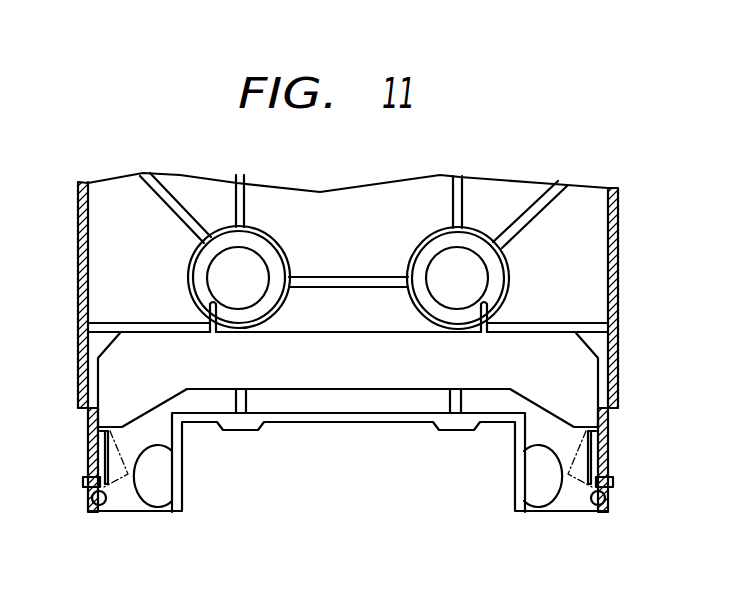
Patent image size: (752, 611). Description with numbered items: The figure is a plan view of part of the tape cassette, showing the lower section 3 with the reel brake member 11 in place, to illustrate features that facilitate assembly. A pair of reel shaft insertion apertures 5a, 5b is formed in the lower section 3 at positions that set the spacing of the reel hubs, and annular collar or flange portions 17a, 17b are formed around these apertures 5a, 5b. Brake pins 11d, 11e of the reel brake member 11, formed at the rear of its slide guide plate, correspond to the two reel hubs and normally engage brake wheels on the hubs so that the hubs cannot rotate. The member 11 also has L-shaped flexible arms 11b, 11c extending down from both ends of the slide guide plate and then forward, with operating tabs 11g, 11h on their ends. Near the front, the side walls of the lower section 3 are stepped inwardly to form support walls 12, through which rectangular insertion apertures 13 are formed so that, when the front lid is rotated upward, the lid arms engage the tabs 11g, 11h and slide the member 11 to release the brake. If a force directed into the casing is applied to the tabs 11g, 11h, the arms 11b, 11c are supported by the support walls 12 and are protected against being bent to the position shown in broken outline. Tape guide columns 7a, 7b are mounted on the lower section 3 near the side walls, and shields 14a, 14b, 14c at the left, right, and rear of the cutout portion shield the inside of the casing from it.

The lower section 3 is at (620, 265).
The reel shaft insertion aperture 5a is at (213, 267).
The reel shaft insertion aperture 5b is at (483, 261).
The reel brake member 11 is at (402, 392).
The arm 11b is at (92, 453).
The arm 11c is at (611, 452).
The brake pin 11d is at (222, 306).
The brake pin 11e is at (474, 306).
The operating tab 11g is at (83, 481).
The operating tab 11h is at (615, 481).
The support wall 12 is at (87, 428).
The rectangular insertion aperture 13 is at (103, 512).
The shield 14a is at (184, 473).
The shield 14b is at (515, 478).
The shield 14c is at (348, 423).
The collar or flange portion 17a is at (190, 285).
The collar or flange portion 17b is at (503, 284).
The tape guide column 7a is at (153, 511).
The tape guide column 7b is at (542, 511).